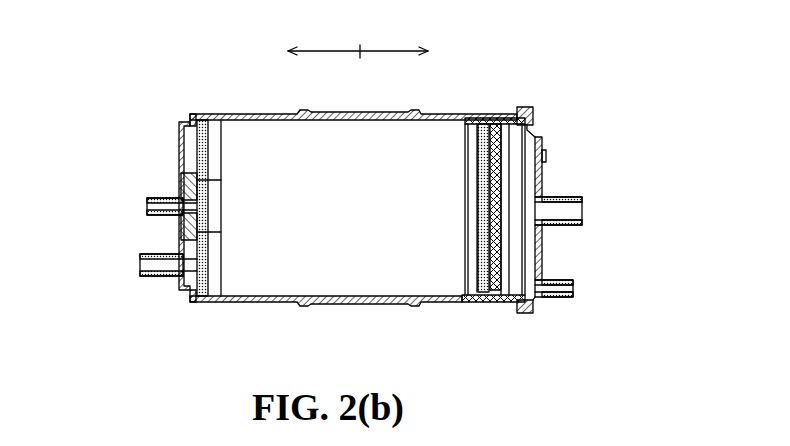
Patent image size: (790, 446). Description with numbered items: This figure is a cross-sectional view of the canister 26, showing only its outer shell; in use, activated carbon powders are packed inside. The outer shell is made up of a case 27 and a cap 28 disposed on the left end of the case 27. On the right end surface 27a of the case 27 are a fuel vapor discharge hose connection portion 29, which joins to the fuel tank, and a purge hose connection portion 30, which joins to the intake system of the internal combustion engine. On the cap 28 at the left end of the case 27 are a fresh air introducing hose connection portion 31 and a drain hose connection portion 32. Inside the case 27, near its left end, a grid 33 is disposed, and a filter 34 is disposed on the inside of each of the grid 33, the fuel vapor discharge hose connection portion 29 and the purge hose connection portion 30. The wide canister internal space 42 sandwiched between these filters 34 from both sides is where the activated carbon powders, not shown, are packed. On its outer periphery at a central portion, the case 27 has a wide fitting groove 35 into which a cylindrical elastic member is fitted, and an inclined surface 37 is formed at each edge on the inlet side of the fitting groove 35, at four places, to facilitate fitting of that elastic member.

The canister 26 is at (155, 72).
The case 27 is at (454, 108).
The right end surface 27a is at (180, 143).
The cap 28 is at (545, 140).
The fuel vapor discharge hose connection portion 29 is at (163, 199).
The purge hose connection portion 30 is at (163, 278).
The fresh air introducing hose connection portion 31 is at (562, 197).
The drain hose connection portion 32 is at (562, 298).
The grid 33 is at (495, 303).
The filter 34 is at (203, 207).
The fitting groove 35 is at (357, 113).
The inclined surface 37 is at (295, 104).
The canister internal space 42 is at (365, 222).